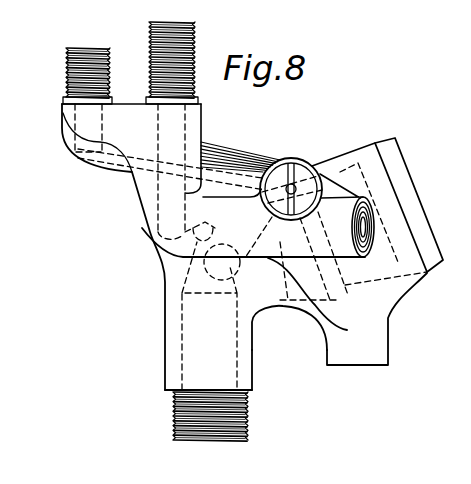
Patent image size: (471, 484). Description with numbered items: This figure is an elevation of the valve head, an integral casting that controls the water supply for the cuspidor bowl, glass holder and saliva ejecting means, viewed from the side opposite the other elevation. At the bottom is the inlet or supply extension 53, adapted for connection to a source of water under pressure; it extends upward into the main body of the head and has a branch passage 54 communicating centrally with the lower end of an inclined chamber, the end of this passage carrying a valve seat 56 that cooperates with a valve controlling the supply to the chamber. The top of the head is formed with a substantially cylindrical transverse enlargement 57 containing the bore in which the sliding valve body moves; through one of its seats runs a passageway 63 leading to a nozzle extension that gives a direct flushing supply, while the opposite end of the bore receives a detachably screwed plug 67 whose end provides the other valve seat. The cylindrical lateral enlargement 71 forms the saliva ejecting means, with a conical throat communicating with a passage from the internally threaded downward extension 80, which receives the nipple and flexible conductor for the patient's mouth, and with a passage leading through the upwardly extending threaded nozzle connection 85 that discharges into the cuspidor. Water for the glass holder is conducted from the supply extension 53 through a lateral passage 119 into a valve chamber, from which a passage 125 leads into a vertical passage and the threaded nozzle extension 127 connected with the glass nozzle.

The threaded nozzle connection 85 is at (109, 63).
The threaded nozzle extension 127 is at (196, 98).
The passageway 63 is at (213, 167).
The cylindrical transverse enlargement 57 is at (267, 157).
The plug 67 is at (303, 162).
The passage 125 is at (208, 223).
The cylindrical lateral enlargement 71 is at (254, 237).
The lateral passage 119 is at (206, 291).
The branch passage 54 is at (232, 280).
The valve seat 56 is at (289, 328).
The inlet or supply extension 53 is at (253, 366).
The downward extension 80 is at (385, 353).